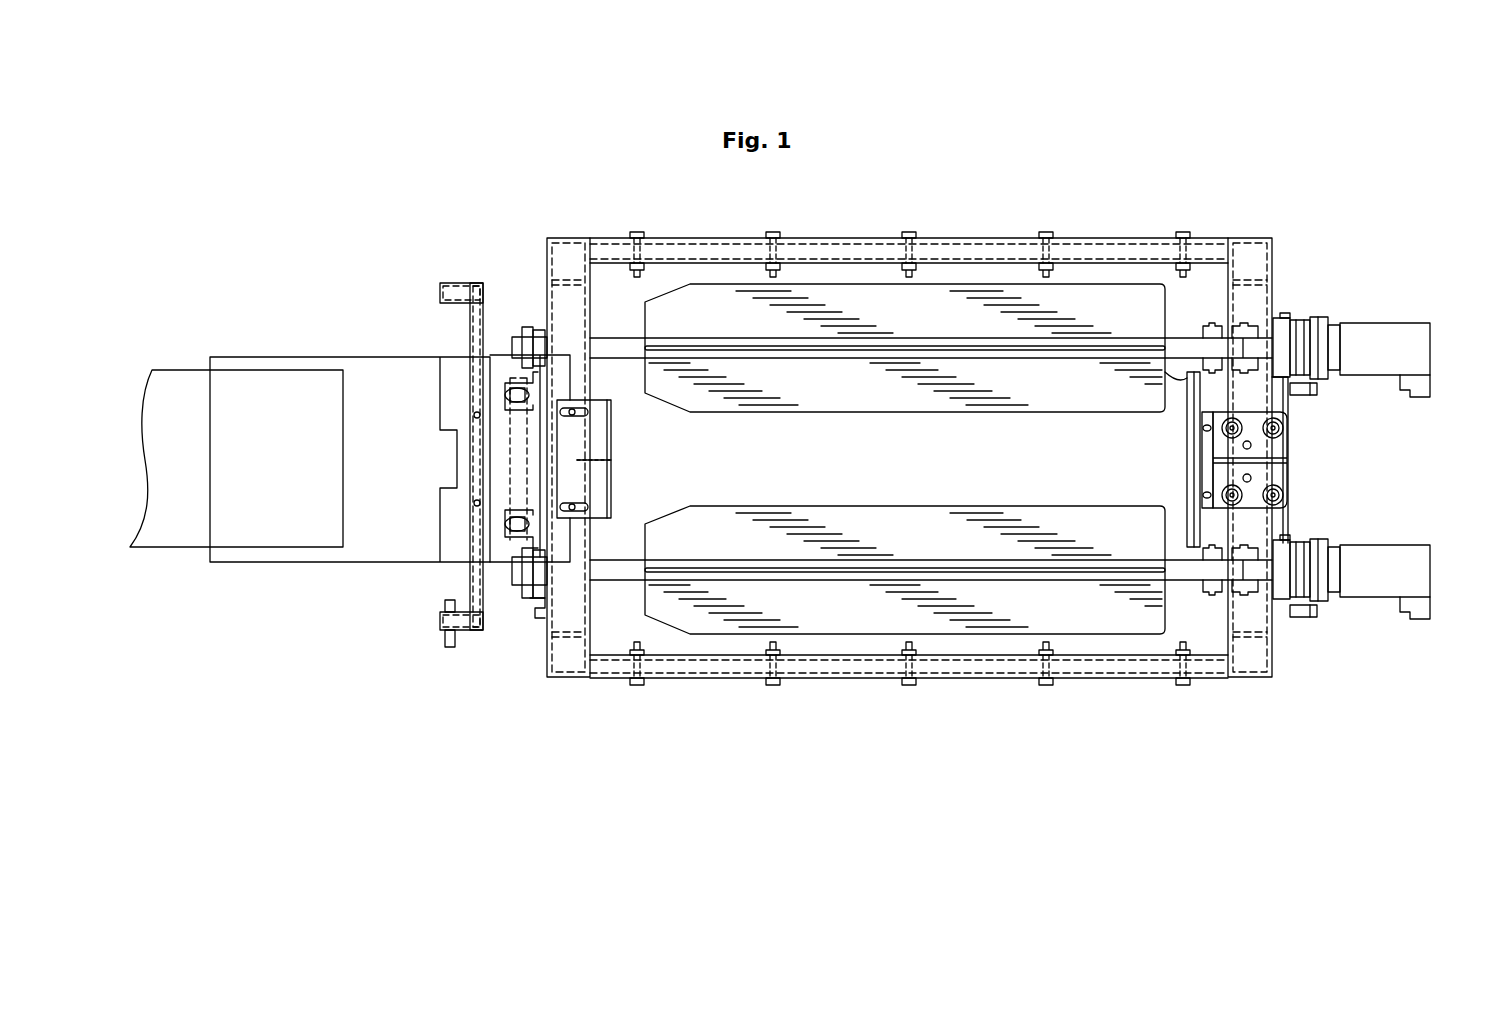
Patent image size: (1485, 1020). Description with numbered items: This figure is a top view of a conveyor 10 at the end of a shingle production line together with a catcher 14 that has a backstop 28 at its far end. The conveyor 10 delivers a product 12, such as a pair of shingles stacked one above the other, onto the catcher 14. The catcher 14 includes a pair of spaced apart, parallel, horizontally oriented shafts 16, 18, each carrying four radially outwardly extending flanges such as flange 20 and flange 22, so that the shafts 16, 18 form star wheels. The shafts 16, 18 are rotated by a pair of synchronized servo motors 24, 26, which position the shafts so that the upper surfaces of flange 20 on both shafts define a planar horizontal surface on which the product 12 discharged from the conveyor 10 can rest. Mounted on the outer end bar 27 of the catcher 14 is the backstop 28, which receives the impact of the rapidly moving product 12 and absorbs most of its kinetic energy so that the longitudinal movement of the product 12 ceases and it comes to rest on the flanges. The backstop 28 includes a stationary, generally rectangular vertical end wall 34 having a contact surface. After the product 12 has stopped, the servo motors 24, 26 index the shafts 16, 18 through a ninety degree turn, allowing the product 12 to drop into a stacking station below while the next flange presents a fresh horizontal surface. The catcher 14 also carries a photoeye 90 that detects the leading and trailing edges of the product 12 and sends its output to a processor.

The conveyor 10 is at (326, 562).
The product 12 is at (262, 371).
The catcher 14 is at (718, 693).
The shaft 16 is at (622, 338).
The shaft 18 is at (627, 580).
The flange 20 is at (822, 380).
The flange 22 is at (988, 320).
The servo motor 24 is at (1385, 323).
The servo motor 26 is at (1382, 597).
The outer end bar 27 is at (1275, 622).
The backstop 28 is at (1287, 478).
The stationary end wall 34 is at (1183, 378).
The photoeye 90 is at (445, 640).